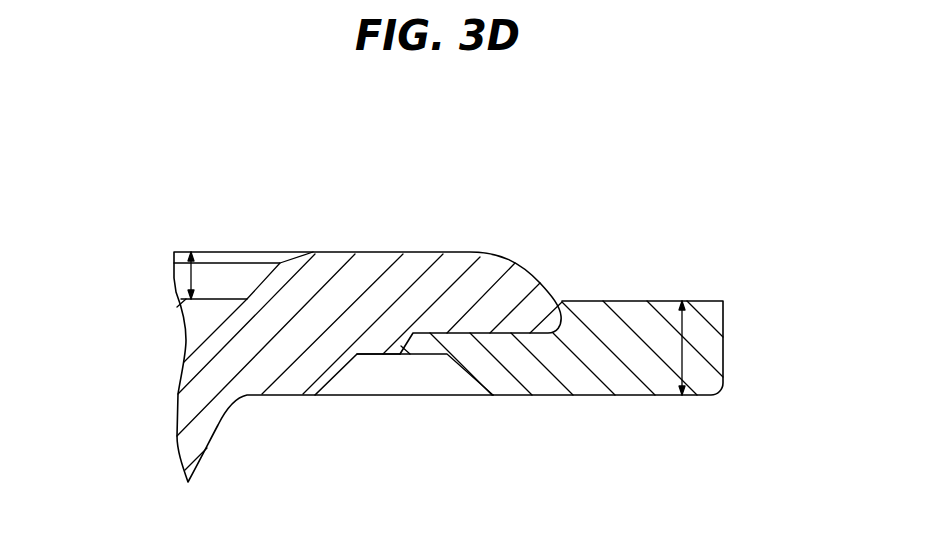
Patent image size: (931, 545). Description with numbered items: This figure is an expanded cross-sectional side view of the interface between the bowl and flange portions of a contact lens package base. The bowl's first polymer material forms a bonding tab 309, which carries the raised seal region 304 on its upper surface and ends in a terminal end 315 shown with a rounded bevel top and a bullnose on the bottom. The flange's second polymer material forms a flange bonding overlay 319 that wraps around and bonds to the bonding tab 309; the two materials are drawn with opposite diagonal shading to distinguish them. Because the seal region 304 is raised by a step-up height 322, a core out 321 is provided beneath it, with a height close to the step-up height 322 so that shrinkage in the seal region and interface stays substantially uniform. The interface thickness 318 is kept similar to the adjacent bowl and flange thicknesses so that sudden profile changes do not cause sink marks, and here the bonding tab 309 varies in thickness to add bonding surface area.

The seal region 304 is at (367, 252).
The bonding tab 309 is at (425, 280).
The terminal end 315 is at (562, 300).
The interface thickness 318 is at (682, 352).
The flange bonding overlay 319 is at (583, 397).
The core out 321 is at (382, 380).
The step-up height 322 is at (175, 277).